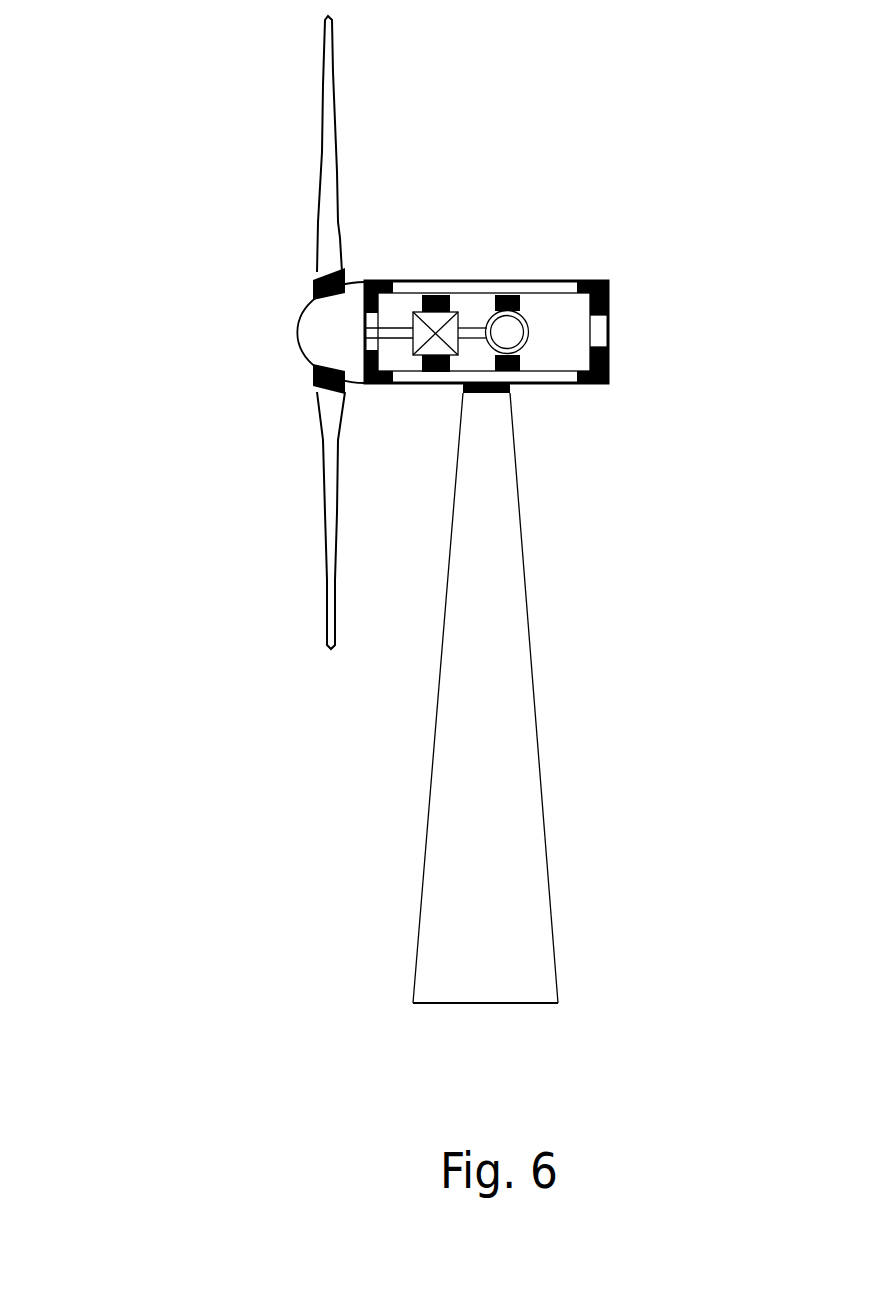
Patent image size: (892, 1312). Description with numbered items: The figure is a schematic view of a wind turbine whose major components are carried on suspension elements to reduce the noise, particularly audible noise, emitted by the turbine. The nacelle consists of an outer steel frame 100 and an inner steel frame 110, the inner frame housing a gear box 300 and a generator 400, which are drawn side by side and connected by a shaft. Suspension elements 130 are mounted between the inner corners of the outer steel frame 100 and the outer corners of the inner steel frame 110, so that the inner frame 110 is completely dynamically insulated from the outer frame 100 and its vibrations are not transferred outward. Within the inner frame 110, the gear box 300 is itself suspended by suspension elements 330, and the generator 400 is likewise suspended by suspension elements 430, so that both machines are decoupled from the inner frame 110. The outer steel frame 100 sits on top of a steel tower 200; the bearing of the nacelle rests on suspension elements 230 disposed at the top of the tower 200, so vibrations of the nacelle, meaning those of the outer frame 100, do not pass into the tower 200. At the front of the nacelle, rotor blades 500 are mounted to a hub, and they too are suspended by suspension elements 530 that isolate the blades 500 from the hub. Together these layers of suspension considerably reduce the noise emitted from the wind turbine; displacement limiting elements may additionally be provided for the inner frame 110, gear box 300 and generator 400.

The outer steel frame 100 is at (545, 282).
The inner steel frame 110 is at (590, 331).
The suspension elements 130 is at (608, 285).
The tower 200 is at (523, 548).
The suspension elements 230 is at (510, 393).
The gear box 300 is at (413, 312).
The suspension elements 330 is at (432, 372).
The generator 400 is at (492, 311).
The suspension elements 430 is at (510, 295).
The rotor blades 500 is at (323, 96).
The suspension elements 530 is at (315, 290).